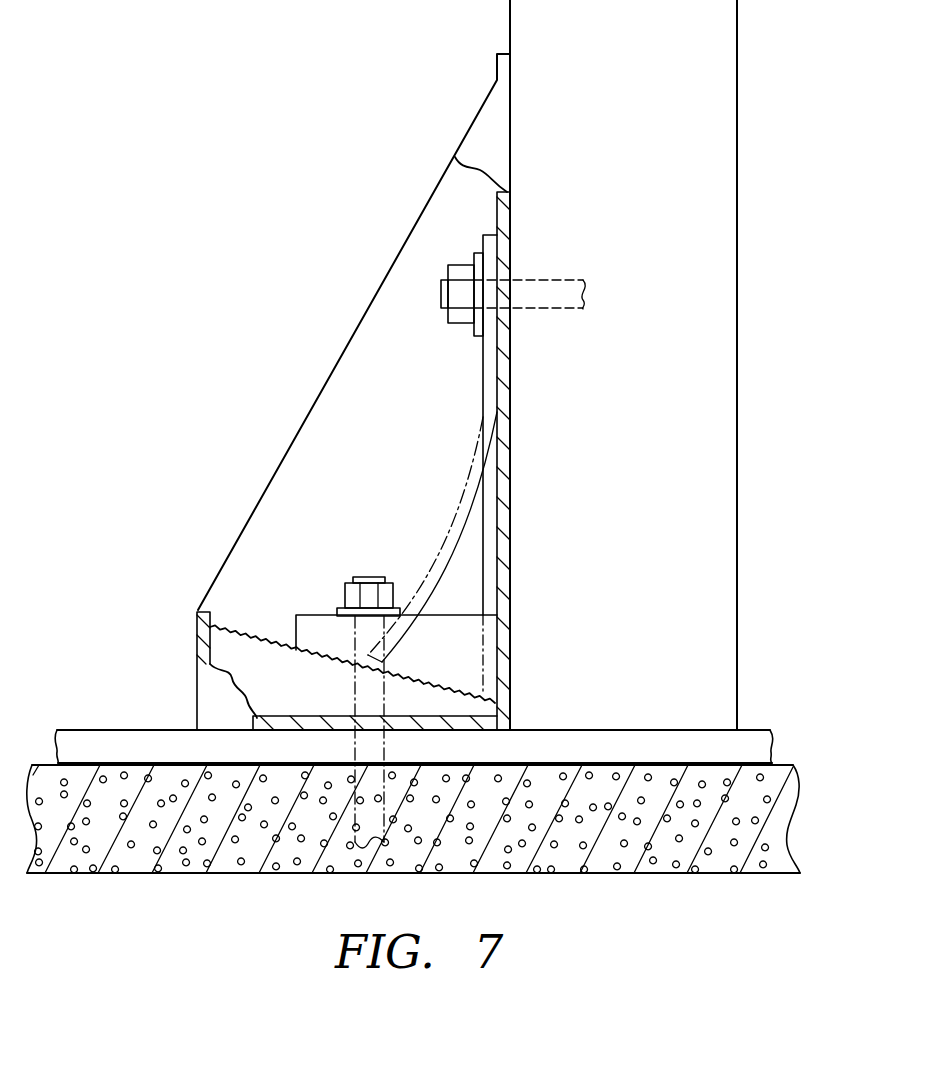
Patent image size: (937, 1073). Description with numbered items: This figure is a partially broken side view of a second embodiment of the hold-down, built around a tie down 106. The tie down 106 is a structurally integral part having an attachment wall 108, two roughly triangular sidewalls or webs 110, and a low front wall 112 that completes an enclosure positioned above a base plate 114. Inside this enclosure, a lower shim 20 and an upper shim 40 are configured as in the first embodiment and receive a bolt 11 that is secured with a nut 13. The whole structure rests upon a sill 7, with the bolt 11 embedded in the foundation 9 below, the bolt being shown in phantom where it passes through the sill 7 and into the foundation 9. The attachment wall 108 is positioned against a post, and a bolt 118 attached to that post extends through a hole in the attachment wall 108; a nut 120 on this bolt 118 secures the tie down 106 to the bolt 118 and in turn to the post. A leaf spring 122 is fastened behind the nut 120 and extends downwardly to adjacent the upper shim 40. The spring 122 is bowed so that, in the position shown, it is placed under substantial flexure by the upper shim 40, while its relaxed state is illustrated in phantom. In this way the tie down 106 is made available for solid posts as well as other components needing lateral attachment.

The sill 7 is at (84, 728).
The foundation 9 is at (36, 757).
The bolt 11 is at (367, 577).
The nut 13 is at (338, 608).
The lower shim 20 is at (255, 637).
The upper shim 40 is at (452, 612).
The tie down 106 is at (472, 120).
The attachment wall 108 is at (510, 237).
The sidewalls or webs 110 is at (453, 195).
The low front wall 112 is at (196, 648).
The base plate 114 is at (256, 717).
The bolt 118 is at (440, 298).
The nut 120 is at (447, 320).
The leaf spring 122 is at (482, 352).